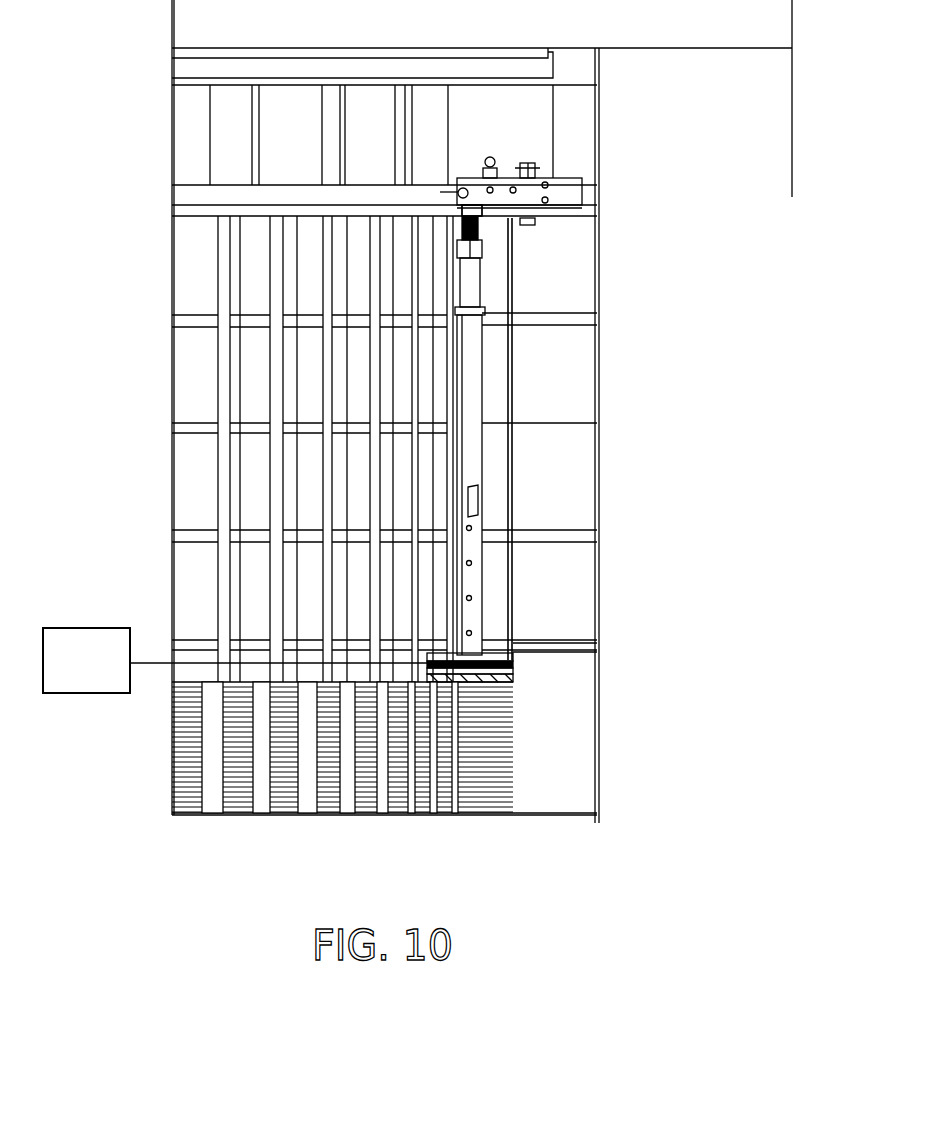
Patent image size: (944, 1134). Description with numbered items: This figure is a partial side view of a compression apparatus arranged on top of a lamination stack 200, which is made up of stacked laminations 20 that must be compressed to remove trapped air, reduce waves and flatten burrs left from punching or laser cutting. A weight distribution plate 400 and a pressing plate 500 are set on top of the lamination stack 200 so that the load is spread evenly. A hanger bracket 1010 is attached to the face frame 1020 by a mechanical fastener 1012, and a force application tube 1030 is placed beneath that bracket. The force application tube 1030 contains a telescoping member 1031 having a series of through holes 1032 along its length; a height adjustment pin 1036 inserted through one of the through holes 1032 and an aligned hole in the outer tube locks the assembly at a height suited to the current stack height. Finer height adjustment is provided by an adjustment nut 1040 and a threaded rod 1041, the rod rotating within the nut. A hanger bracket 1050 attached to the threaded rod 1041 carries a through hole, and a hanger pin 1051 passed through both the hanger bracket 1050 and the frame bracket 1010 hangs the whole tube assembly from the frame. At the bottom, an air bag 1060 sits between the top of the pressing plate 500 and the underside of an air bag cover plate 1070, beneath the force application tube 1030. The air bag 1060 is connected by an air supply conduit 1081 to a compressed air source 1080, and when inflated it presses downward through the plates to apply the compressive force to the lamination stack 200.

The stacked laminations 20 is at (237, 805).
The lamination stack 200 is at (130, 782).
The weight distribution plate 400 is at (513, 676).
The pressing plate 500 is at (513, 668).
The hanger bracket 1010 is at (582, 190).
The mechanical fastener 1012 is at (528, 163).
The face frame 1020 is at (175, 202).
The force application tube 1030 is at (483, 450).
The telescoping member 1031 is at (472, 578).
The through holes 1032 is at (470, 598).
The height adjustment pin 1036 is at (472, 487).
The adjustment nut 1040 is at (482, 250).
The threaded rod 1041 is at (478, 220).
The hanger bracket 1050 is at (462, 213).
The hanger pin 1051 is at (463, 190).
The air bag 1060 is at (513, 662).
The air bag cover plate 1070 is at (513, 657).
The compressed air source 1080 is at (117, 672).
The air supply conduit 1081 is at (153, 663).